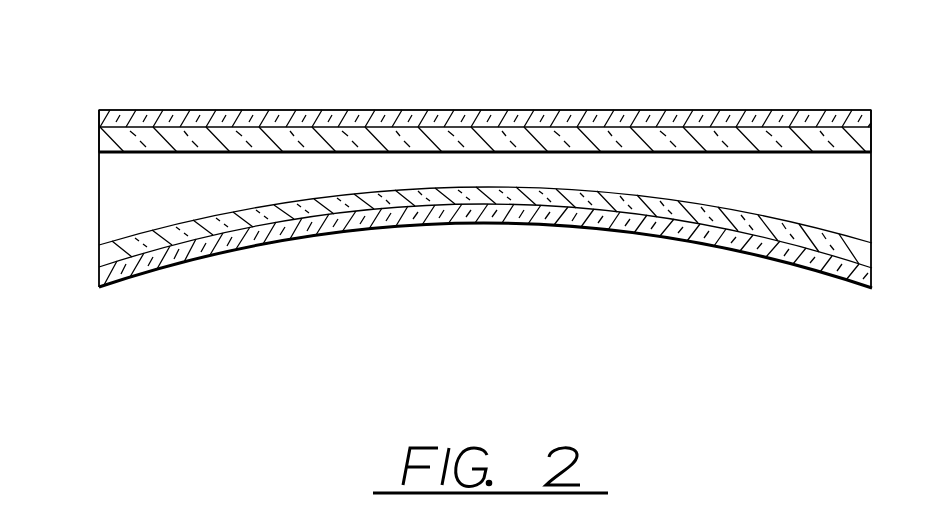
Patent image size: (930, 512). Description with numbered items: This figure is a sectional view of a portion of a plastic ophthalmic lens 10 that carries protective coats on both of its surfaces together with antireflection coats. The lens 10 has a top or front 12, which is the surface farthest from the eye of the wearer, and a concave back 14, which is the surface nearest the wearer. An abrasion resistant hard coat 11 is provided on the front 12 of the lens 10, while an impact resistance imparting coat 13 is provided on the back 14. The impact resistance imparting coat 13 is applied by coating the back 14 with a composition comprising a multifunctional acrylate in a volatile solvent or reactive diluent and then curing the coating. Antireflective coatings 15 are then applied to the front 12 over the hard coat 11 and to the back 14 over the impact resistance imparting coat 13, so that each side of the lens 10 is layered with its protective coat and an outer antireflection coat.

The plastic lens 10 is at (127, 192).
The abrasion resistant hard coat 11 is at (175, 137).
The front 12 is at (703, 153).
The impact resistance imparting coat 13 is at (173, 243).
The back 14 is at (704, 204).
The antireflective coatings 15 is at (758, 352).